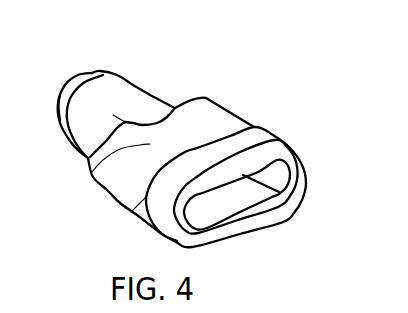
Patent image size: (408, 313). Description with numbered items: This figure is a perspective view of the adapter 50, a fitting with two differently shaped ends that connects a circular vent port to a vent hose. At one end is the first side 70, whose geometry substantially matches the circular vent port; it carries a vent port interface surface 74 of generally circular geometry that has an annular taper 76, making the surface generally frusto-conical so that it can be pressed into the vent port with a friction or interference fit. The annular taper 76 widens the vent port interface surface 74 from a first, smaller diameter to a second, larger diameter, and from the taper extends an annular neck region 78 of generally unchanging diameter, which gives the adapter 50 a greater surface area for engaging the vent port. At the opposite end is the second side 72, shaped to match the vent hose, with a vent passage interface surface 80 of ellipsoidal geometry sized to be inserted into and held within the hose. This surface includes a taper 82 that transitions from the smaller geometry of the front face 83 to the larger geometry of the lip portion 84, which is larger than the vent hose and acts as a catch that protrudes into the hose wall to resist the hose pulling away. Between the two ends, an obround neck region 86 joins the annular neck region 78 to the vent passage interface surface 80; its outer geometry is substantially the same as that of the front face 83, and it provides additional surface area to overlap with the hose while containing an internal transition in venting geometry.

The adapter 50 is at (250, 31).
The first side 70 is at (84, 68).
The second side 72 is at (309, 194).
The vent port interface surface 74 is at (92, 70).
The annular taper 76 is at (68, 100).
The annular neck region 78 is at (130, 86).
The vent passage interface surface 80 is at (271, 138).
The taper 82 is at (215, 150).
The front face 83 is at (297, 160).
The lip portion 84 is at (131, 212).
The obround neck region 86 is at (92, 173).